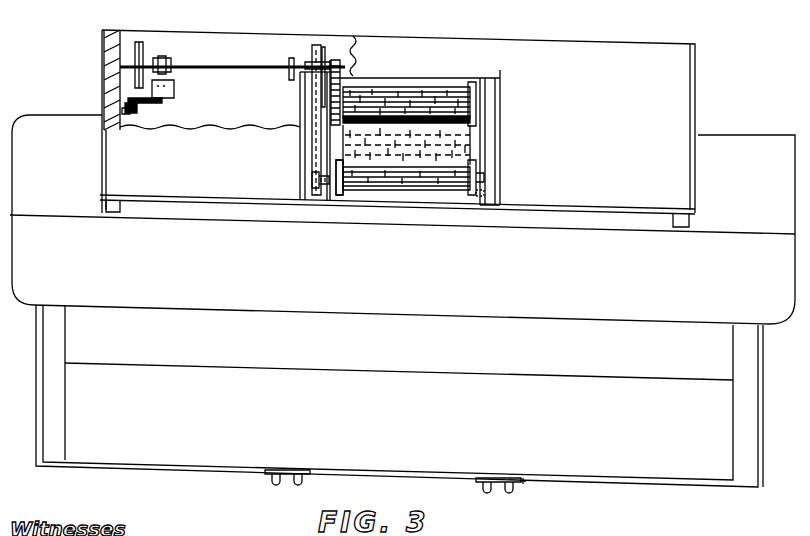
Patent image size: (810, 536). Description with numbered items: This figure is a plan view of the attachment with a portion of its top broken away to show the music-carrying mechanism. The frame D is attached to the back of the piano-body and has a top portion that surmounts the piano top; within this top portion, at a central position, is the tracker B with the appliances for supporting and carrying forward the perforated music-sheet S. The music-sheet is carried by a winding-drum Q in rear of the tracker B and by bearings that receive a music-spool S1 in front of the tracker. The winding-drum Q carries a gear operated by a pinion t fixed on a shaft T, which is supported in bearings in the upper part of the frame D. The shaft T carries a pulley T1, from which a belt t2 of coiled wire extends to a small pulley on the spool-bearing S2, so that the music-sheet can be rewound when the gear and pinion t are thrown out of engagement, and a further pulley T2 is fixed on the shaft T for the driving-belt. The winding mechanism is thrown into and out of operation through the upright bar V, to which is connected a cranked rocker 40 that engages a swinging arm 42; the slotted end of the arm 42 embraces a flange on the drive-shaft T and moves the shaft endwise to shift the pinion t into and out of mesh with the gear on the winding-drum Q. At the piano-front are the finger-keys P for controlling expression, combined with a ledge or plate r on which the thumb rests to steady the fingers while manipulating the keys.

The frame D is at (104, 65).
The shaft T is at (232, 55).
The pulley T1 is at (309, 104).
The pulley T2 is at (138, 42).
The pinion t is at (344, 48).
The belt of coiled wire t2 is at (311, 58).
The swinging arm 42 is at (165, 56).
The cranked rocker 40 is at (150, 99).
The upright bar V is at (125, 110).
The winding-drum Q is at (400, 98).
The tracker B is at (493, 146).
The perforated music-sheet S is at (388, 196).
The music-spool S1 is at (344, 195).
The spool-bearing S2 is at (312, 180).
The finger-keys P is at (385, 493).
The ledge or plate r is at (524, 491).